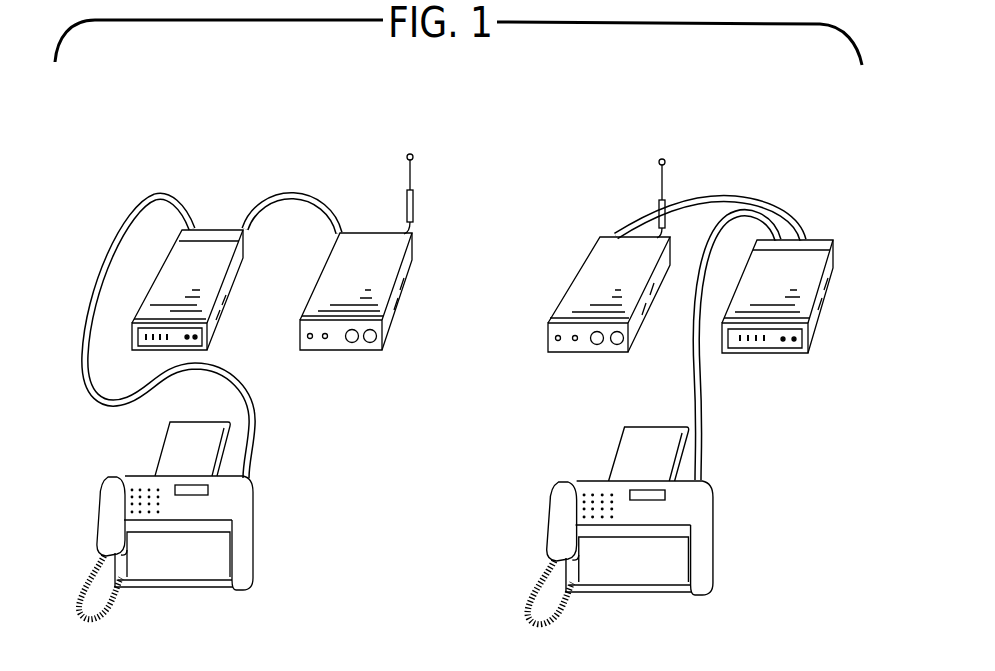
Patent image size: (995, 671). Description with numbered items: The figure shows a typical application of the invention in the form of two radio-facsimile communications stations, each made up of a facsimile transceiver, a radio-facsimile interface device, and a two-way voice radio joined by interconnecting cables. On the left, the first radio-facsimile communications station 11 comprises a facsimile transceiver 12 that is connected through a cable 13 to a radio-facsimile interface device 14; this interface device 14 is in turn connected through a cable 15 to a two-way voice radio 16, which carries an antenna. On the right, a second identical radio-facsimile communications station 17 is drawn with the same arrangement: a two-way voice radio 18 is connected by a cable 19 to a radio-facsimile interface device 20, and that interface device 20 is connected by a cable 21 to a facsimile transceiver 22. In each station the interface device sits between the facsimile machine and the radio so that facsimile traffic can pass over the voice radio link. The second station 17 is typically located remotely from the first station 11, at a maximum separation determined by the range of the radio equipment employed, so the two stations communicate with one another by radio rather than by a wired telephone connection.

The radio-facsimile communications station 11 is at (423, 103).
The facsimile transceiver 12 is at (268, 511).
The cable 13 is at (110, 247).
The radio-facsimile interface device 14 is at (239, 284).
The cable 15 is at (320, 188).
The two-way voice radio 16 is at (414, 291).
The radio-facsimile communications station 17 is at (855, 105).
The two-way voice radio 18 is at (552, 284).
The cable 19 is at (643, 217).
The radio-facsimile interface device 20 is at (836, 303).
The cable 21 is at (703, 383).
The facsimile transceiver 22 is at (731, 499).